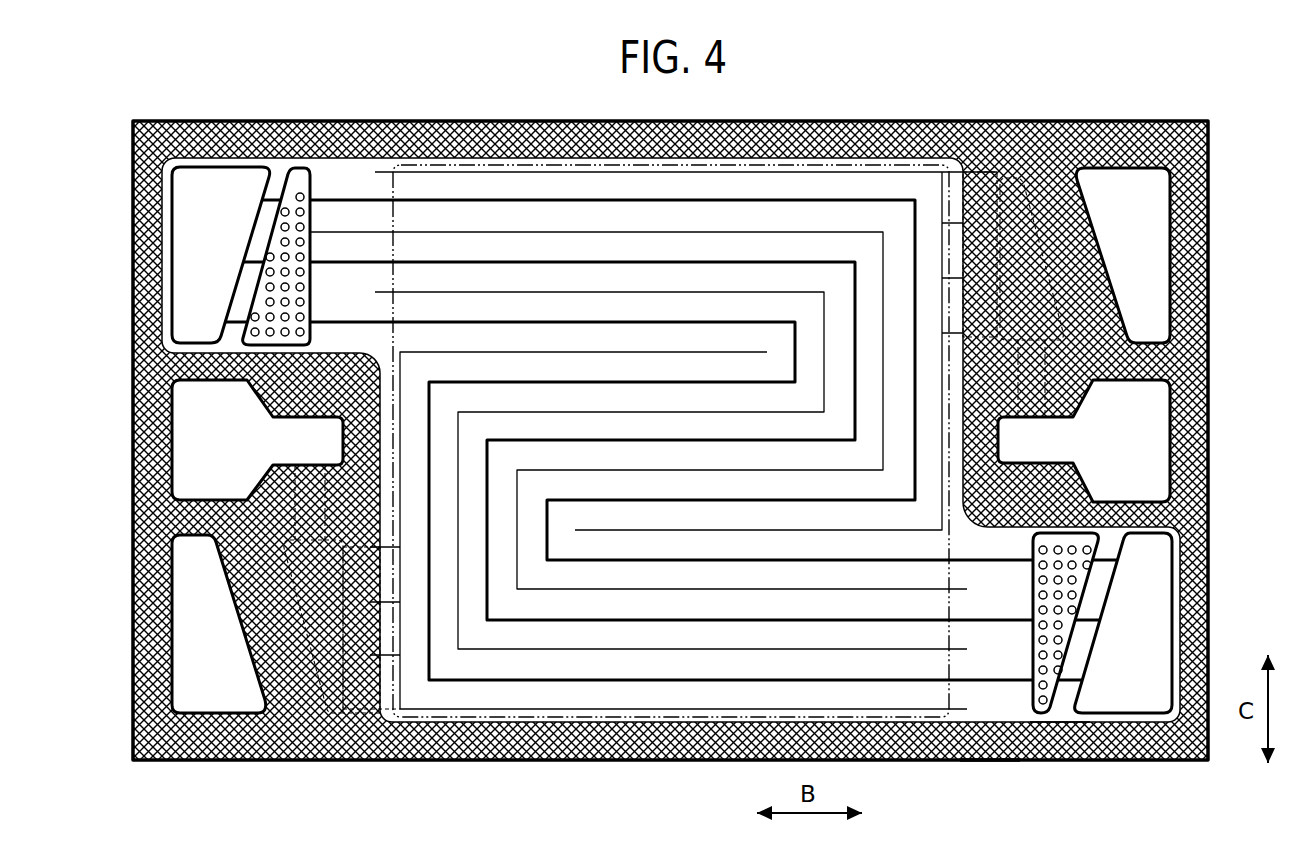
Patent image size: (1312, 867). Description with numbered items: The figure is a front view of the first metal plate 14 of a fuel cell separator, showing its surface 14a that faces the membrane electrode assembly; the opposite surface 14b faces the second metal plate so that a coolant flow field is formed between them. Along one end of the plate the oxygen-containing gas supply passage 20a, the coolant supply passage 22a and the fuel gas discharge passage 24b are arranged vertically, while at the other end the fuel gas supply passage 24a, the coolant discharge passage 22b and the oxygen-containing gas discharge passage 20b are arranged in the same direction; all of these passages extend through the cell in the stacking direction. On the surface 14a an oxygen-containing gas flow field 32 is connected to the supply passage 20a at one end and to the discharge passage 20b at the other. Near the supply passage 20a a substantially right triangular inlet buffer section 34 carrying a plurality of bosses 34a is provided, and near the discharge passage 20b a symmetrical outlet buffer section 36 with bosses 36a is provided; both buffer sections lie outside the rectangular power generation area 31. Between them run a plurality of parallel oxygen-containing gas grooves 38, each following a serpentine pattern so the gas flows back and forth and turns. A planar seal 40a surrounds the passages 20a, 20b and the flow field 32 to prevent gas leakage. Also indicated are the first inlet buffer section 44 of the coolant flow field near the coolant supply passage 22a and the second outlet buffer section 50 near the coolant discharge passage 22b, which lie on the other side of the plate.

The first metal plate 14 is at (370, 51).
The surface 14a is at (988, 762).
The surface 14b is at (1057, 762).
The oxygen-containing gas supply passage 20a is at (221, 255).
The oxygen-containing gas discharge passage 20b is at (1123, 623).
The coolant supply passage 22a is at (257, 440).
The coolant discharge passage 22b is at (1084, 441).
The fuel gas supply passage 24a is at (1123, 255).
The fuel gas discharge passage 24b is at (219, 624).
The power generation area 31 is at (393, 292).
The oxygen-containing gas flow field 32 is at (459, 194).
The inlet buffer section 34 is at (321, 196).
The bosses 34a is at (313, 249).
The outlet buffer section 36 is at (1023, 692).
The bosses 36a is at (1030, 600).
The oxygen-containing gas grooves 38 is at (628, 203).
The planar seal 40a is at (528, 743).
The first inlet buffer section 44 is at (294, 578).
The second outlet buffer section 50 is at (1013, 292).